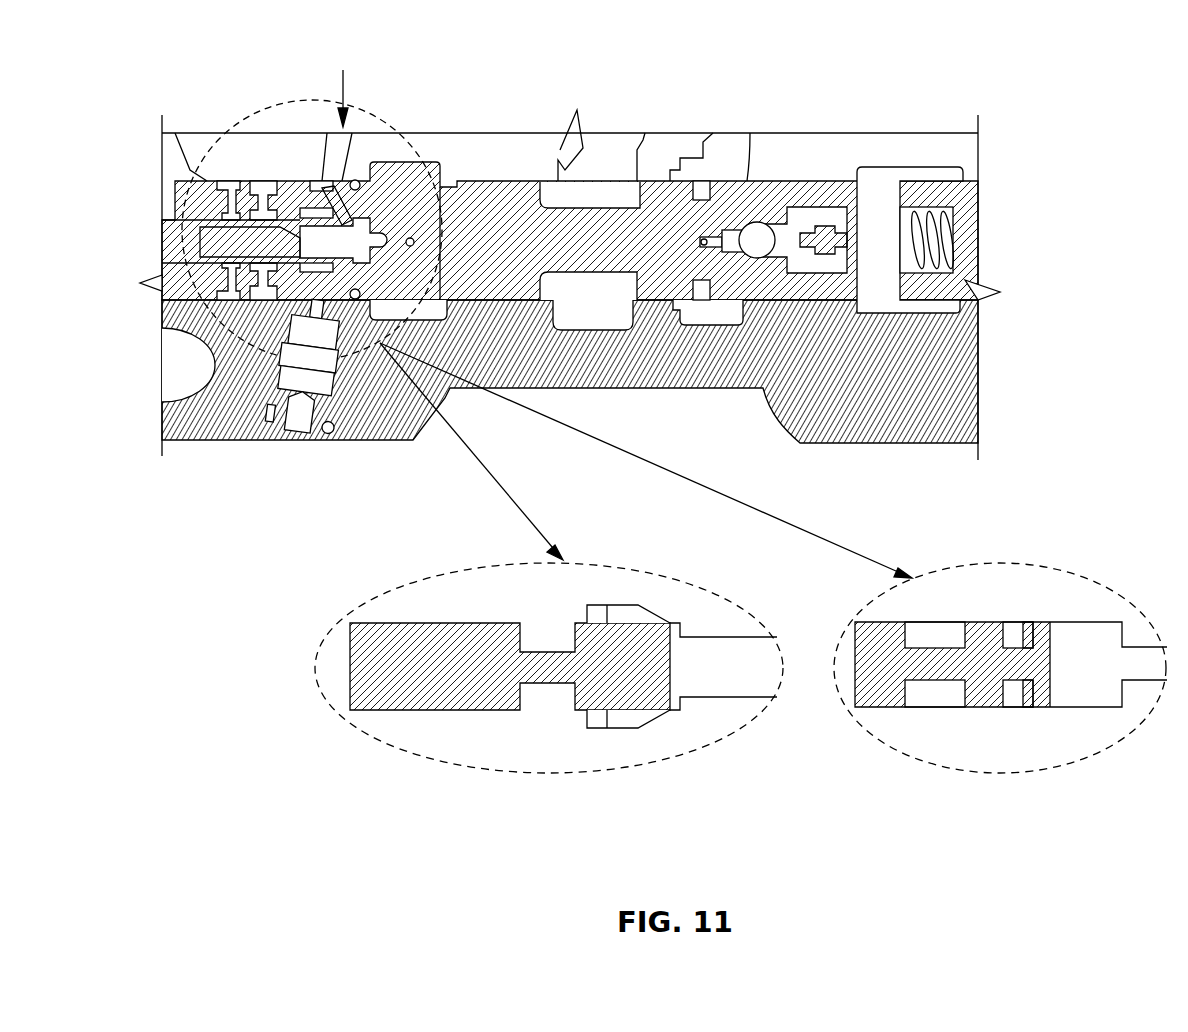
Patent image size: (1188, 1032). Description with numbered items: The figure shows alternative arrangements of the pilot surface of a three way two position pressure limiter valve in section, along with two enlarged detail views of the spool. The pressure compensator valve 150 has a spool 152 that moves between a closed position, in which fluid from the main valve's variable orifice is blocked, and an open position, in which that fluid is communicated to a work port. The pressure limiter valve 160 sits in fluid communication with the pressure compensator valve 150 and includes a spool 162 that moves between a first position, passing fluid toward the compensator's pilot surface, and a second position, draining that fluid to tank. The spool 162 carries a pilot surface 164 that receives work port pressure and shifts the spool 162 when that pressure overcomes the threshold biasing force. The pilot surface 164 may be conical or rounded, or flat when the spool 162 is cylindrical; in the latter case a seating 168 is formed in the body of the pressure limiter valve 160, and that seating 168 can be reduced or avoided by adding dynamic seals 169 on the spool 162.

The pressure compensator valve 150 is at (787, 180).
The spool 152 is at (512, 217).
The pressure limiter valve 160 is at (297, 197).
The spool 162 is at (233, 282).
The pilot surface 164 is at (310, 300).
The seating 168 is at (608, 607).
The dynamic seals 169 is at (1022, 638).